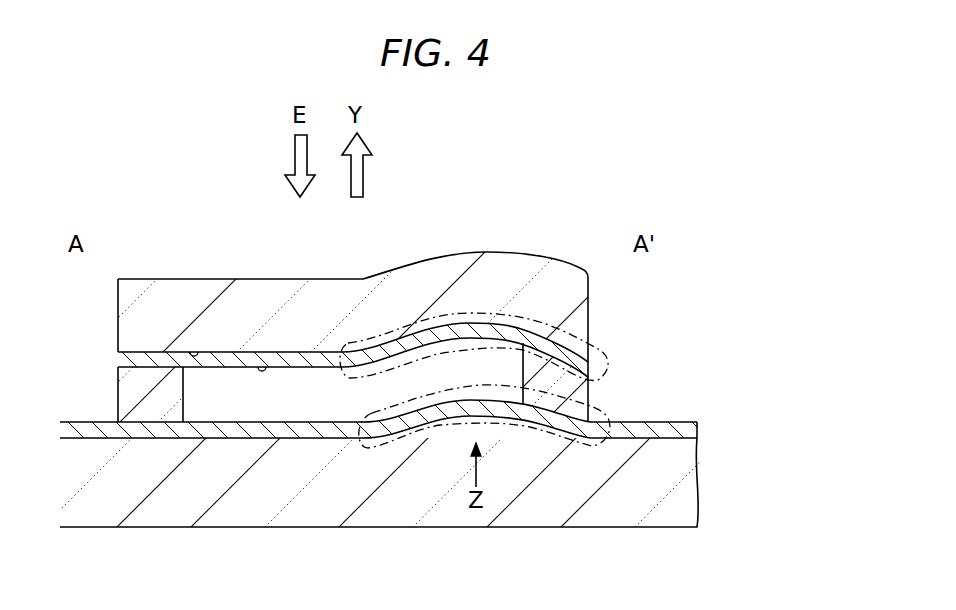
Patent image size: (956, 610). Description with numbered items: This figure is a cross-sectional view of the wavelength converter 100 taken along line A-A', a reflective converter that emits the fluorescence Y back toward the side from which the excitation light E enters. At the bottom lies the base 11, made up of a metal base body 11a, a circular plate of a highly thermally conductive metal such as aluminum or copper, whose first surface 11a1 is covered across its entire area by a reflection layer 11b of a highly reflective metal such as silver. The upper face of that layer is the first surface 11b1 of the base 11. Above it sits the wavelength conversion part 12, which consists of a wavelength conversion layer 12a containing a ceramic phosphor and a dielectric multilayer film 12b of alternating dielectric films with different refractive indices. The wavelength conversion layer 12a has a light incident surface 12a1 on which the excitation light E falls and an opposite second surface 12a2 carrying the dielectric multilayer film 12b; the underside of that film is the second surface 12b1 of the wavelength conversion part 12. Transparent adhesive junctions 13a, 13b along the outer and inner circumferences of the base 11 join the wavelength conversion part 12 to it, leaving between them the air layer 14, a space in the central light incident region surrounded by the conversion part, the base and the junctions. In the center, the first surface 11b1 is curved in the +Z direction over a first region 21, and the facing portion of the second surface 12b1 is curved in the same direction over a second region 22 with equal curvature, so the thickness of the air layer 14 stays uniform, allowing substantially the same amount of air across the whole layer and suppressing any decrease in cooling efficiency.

The wavelength converter 100 is at (676, 149).
The base 11 is at (787, 418).
The base body 11a is at (680, 488).
The first surface of the base body 11a1 is at (647, 423).
The reflection layer 11b is at (692, 431).
The first surface of the base 11b1 is at (90, 421).
The wavelength conversion part 12 is at (687, 282).
The wavelength conversion layer 12a is at (588, 292).
The light incident surface 12a1 is at (142, 279).
The second surface of the wavelength conversion layer 12a2 is at (203, 352).
The dielectric multilayer film 12b is at (577, 361).
The second surface of the wavelength conversion part 12b1 is at (270, 367).
The junction 13a is at (143, 403).
The junction 13b is at (557, 385).
The air layer 14 is at (286, 403).
The first region 21 is at (430, 420).
The second region 22 is at (428, 316).